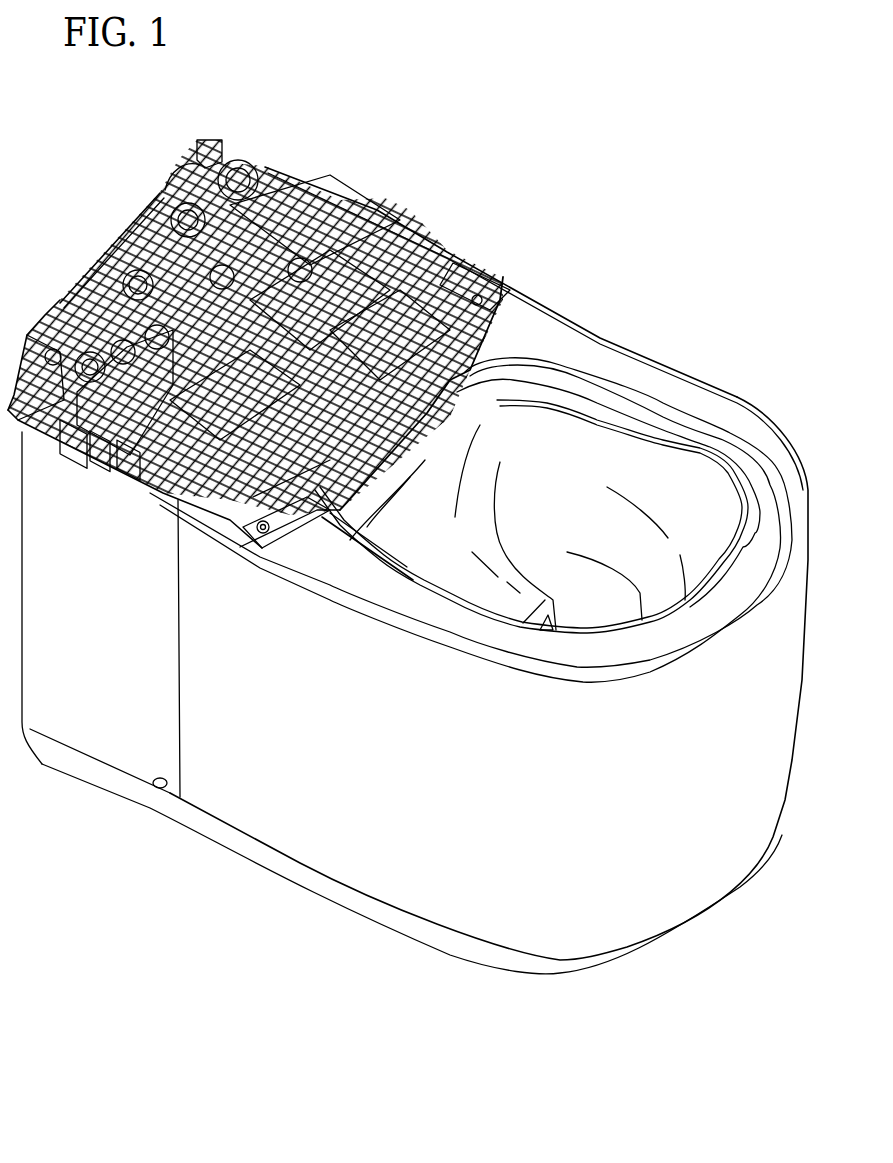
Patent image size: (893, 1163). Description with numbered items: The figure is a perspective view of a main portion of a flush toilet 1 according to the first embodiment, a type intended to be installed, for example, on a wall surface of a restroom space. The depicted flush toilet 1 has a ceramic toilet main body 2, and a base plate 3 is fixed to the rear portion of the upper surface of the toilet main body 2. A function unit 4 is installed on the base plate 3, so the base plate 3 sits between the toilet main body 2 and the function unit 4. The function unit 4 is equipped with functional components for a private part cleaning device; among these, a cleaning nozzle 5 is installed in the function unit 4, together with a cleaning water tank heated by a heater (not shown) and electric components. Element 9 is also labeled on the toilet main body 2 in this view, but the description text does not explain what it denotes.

The flush toilet 1 is at (151, 168).
The toilet main body 2 is at (754, 806).
The base plate 3 is at (420, 340).
The function unit 4 is at (386, 195).
The cleaning nozzle 5 is at (395, 380).
The rim 9 is at (727, 420).